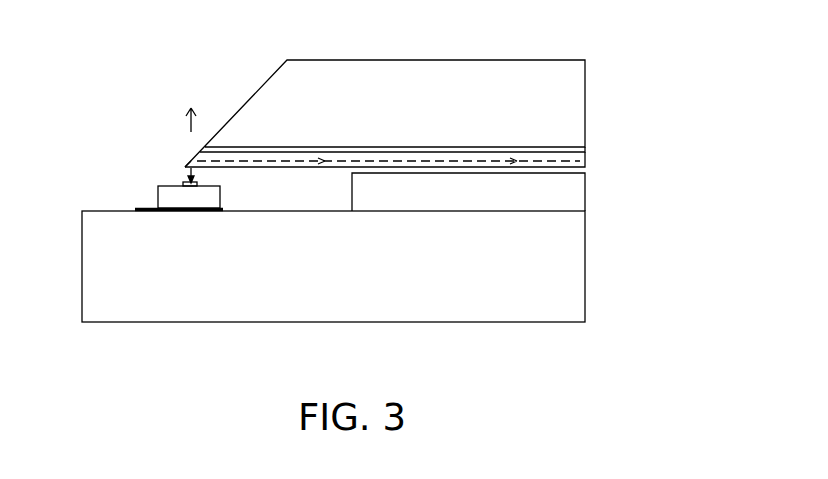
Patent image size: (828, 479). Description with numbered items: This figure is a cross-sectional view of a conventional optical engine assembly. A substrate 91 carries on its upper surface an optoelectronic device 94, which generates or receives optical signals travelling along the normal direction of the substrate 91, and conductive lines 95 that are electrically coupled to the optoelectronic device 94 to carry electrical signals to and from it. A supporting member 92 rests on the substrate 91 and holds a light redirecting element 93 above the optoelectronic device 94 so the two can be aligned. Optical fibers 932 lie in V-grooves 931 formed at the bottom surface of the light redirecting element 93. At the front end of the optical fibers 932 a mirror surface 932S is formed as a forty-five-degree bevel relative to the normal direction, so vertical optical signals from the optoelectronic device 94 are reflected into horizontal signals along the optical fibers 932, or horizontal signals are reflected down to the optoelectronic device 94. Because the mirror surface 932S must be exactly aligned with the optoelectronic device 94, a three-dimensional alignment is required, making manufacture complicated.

The substrate 91 is at (585, 265).
The supporting member 92 is at (585, 197).
The light redirecting element 93 is at (585, 85).
The V-grooves 931 is at (586, 149).
The optical fibers 932 is at (585, 162).
The mirror surface 932S is at (185, 167).
The optoelectronic device 94 is at (158, 188).
The conductive lines 95 is at (135, 208).